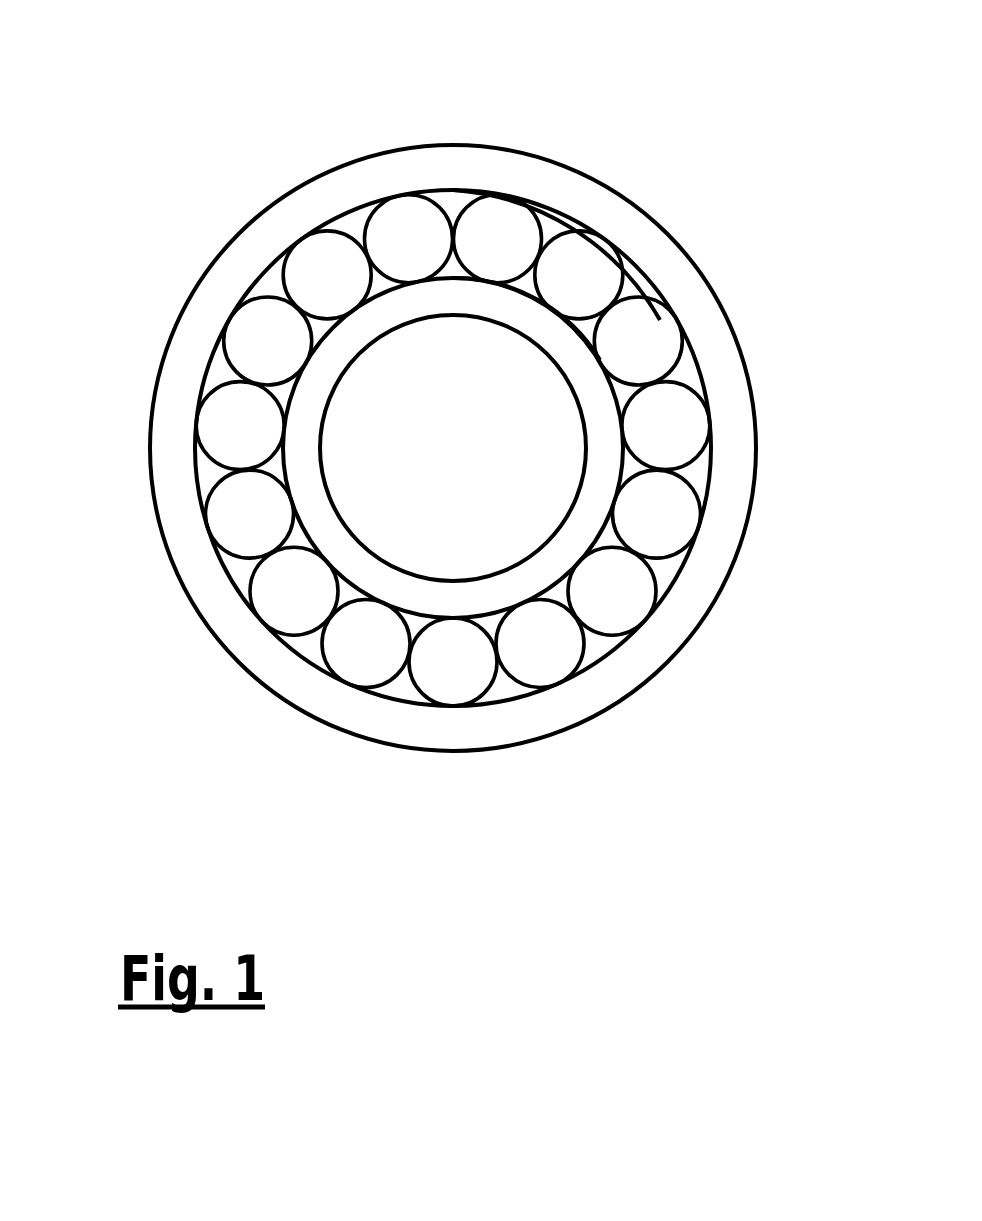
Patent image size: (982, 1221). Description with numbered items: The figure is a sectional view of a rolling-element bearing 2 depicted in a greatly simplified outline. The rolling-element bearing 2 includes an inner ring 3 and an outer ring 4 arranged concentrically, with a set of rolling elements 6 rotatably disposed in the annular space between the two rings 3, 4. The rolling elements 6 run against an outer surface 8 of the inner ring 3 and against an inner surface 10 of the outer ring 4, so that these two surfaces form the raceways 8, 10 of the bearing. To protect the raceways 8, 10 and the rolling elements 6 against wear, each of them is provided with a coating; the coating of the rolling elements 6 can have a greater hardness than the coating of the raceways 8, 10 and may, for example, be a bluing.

The rolling-element bearing 2 is at (212, 195).
The inner ring 3 is at (518, 313).
The outer ring 4 is at (685, 280).
The rolling elements 6 is at (582, 277).
The outer surface of the inner ring 8 is at (582, 340).
The inner surface of the outer ring 10 is at (560, 210).